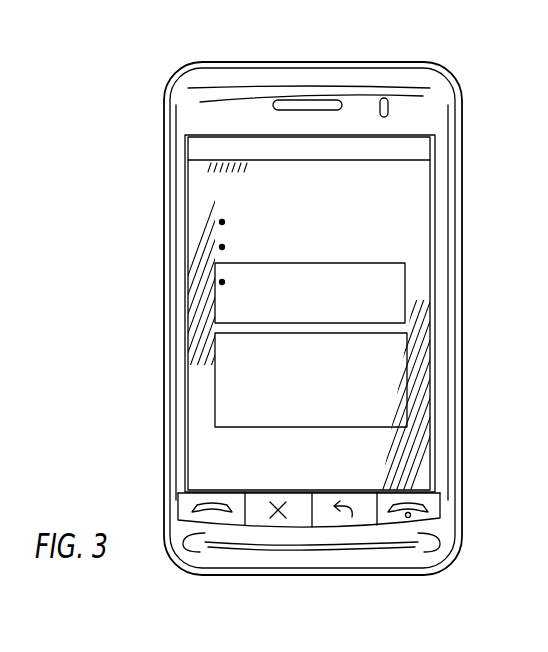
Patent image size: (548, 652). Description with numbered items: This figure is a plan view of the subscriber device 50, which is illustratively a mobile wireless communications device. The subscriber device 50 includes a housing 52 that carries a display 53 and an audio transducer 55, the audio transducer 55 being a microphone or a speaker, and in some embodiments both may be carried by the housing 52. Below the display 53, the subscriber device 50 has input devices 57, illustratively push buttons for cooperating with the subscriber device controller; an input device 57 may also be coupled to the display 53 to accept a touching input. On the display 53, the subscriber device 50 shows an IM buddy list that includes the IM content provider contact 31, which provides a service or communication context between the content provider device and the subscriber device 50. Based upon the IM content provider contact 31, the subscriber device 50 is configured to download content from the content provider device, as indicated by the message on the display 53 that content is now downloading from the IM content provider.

The subscriber device 50 is at (185, 50).
The housing 52 is at (163, 218).
The audio transducer 55 is at (325, 105).
The display 53 is at (427, 330).
The IM content provider contact 31 is at (215, 312).
The input devices 57 is at (215, 493).